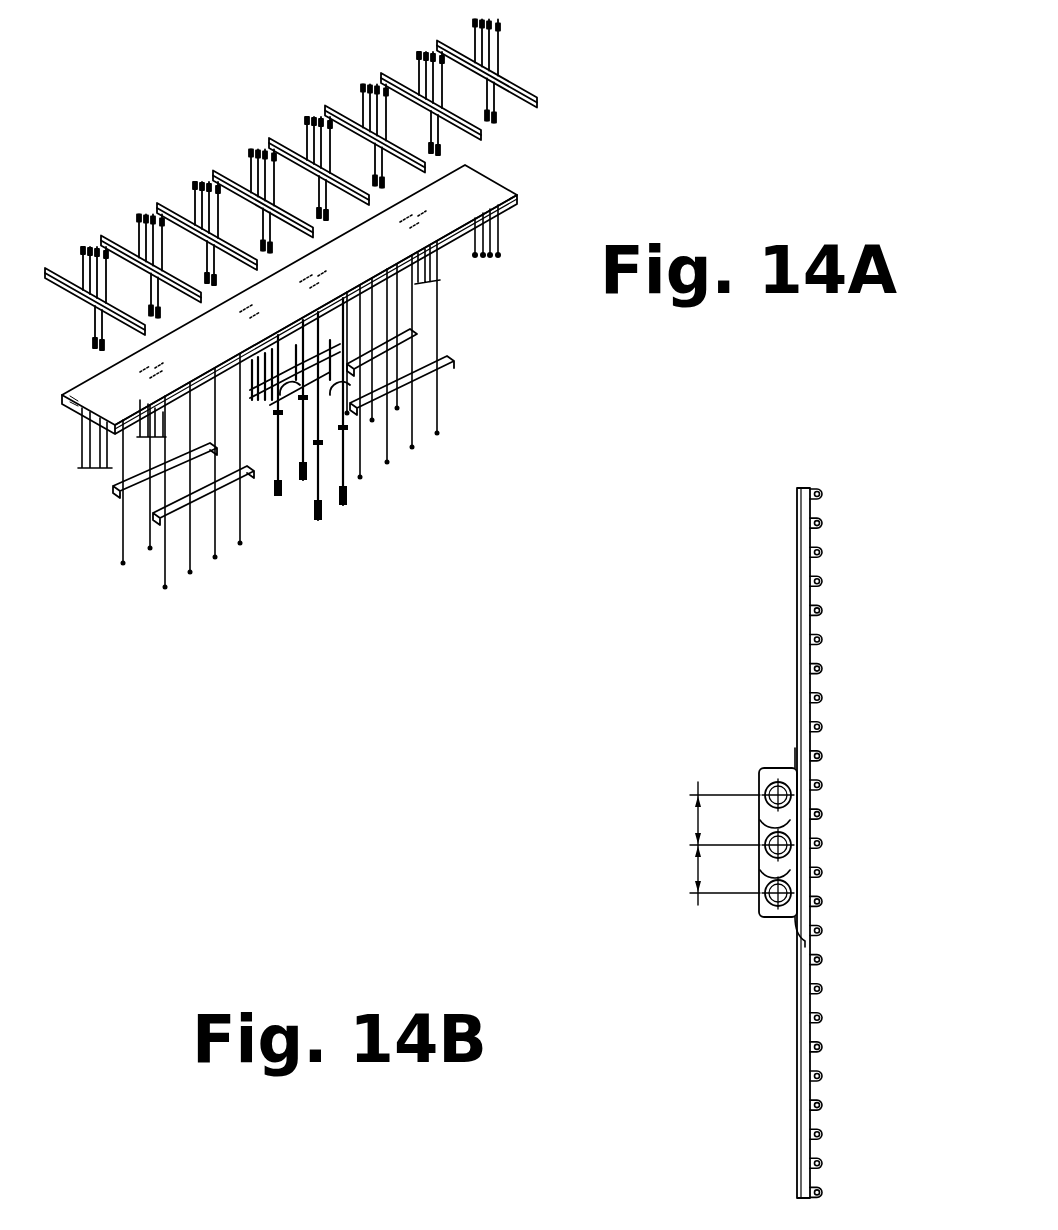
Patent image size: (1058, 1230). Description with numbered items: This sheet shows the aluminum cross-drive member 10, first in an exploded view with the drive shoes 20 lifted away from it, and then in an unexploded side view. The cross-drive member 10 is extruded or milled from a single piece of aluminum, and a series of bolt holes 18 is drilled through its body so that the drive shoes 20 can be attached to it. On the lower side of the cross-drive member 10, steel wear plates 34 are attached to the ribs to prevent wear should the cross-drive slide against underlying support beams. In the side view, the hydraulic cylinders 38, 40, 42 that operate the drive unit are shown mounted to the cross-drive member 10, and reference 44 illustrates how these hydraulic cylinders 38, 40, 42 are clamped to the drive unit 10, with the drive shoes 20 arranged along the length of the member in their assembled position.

In FIG. 14A, the cross-drive member 10 is at (466, 200).
In FIG. 14B, the cross-drive member 10 is at (802, 588).
In FIG. 14A, the bolt holes 18 is at (148, 380).
In FIG. 14A, the drive shoes 20 is at (507, 80).
In FIG. 14B, the drive shoes 20 is at (813, 498).
In FIG. 14A, the steel wear plates 34 is at (200, 517).
In FIG. 14B, the hydraulic cylinder 38 is at (766, 790).
In FIG. 14B, the hydraulic cylinder 40 is at (790, 850).
In FIG. 14B, the hydraulic cylinder 42 is at (790, 898).
In FIG. 14A, the clamp 44 is at (322, 420).
In FIG. 14B, the clamp 44 is at (772, 768).